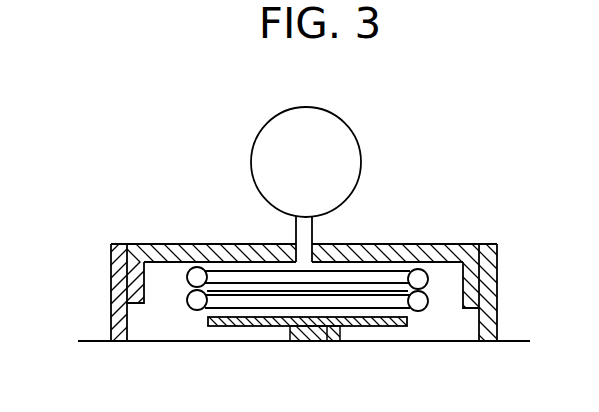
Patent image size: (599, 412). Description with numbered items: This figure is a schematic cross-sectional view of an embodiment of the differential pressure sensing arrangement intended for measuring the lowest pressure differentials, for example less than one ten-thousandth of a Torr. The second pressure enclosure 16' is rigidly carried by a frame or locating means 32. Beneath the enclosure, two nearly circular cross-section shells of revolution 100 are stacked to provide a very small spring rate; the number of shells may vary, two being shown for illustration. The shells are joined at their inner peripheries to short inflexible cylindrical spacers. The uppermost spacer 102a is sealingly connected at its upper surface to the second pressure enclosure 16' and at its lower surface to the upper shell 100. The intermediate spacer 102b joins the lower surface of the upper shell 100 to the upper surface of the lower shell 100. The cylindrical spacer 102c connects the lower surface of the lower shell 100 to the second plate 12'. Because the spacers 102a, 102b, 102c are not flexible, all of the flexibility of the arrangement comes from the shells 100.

The frame or locating means 32 is at (498, 308).
The second pressure enclosure 16' is at (321, 184).
The shells of revolution 100 is at (190, 273).
The spacer 102a is at (395, 270).
The intermediate spacer 102b is at (247, 291).
The second plate 12' is at (333, 341).
The cylindrical spacer 102c is at (335, 318).